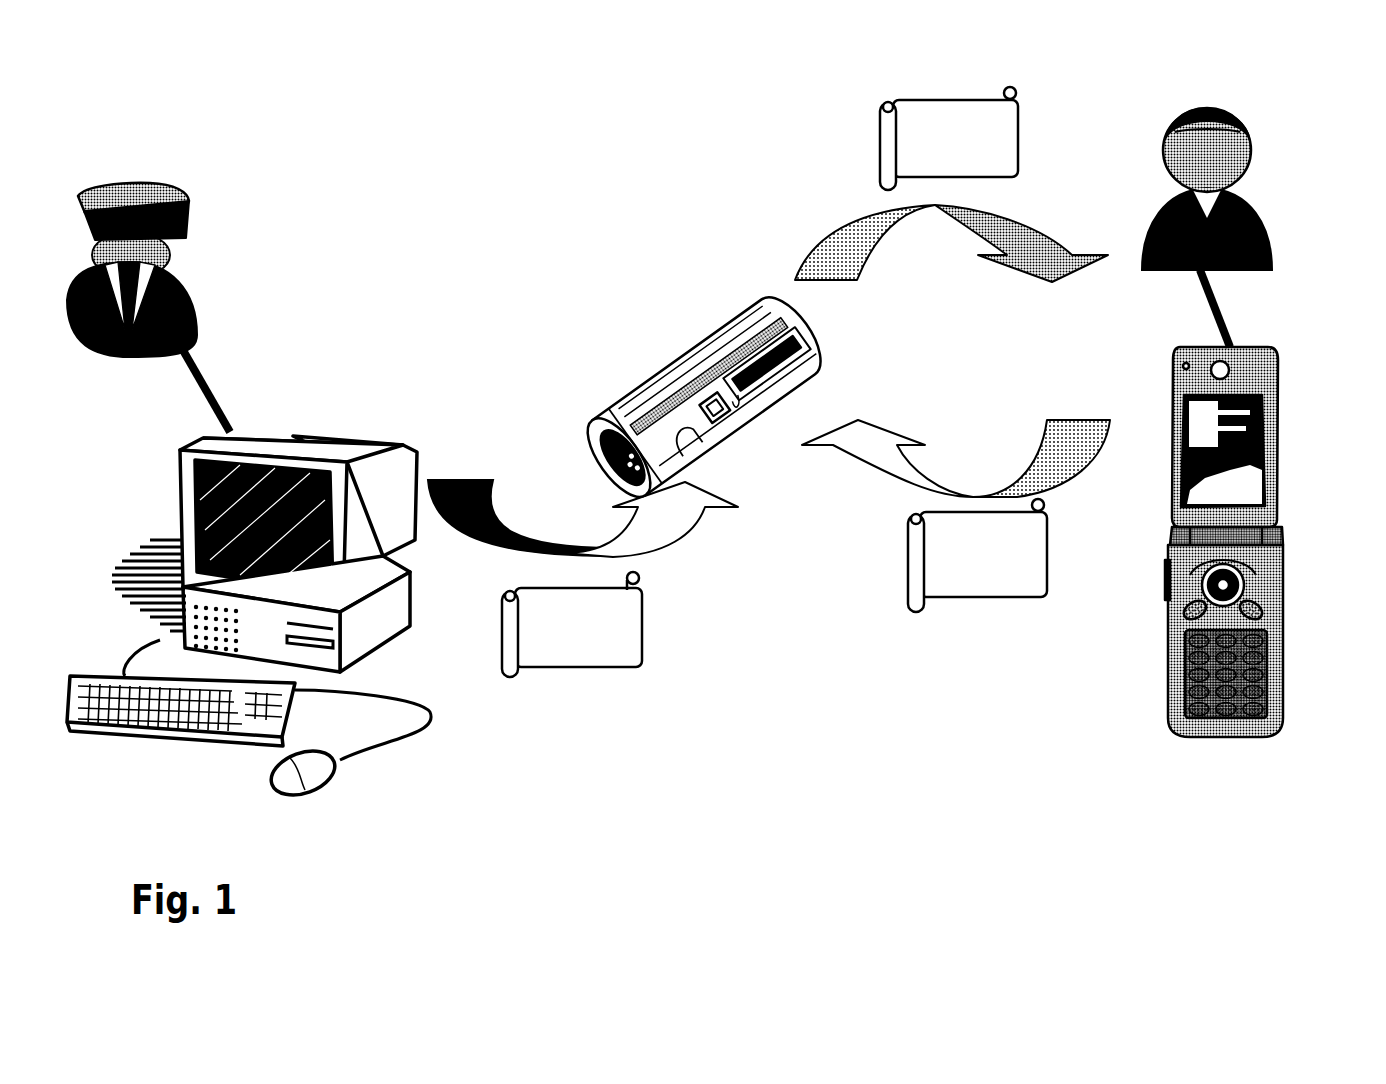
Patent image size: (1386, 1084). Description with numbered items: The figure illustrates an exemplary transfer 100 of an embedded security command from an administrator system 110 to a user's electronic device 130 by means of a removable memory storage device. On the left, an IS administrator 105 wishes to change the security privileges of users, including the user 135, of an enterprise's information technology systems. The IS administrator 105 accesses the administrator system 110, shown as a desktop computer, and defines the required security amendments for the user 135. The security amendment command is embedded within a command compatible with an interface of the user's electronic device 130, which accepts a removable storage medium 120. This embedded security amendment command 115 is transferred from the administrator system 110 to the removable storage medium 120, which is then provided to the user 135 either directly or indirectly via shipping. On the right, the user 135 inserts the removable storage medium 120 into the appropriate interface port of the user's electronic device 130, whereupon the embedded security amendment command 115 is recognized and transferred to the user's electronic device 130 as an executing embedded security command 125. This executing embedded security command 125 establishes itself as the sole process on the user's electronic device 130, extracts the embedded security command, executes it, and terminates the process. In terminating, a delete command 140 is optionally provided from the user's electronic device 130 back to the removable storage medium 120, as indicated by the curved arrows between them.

The transfer 100 is at (835, 712).
The IS administrator 105 is at (156, 307).
The administrator system 110 is at (400, 643).
The embedded security amendment command 115 is at (572, 624).
The removable storage medium 120 is at (653, 348).
The executing embedded security command 125 is at (949, 138).
The user's electronic device 130 is at (1173, 713).
The user 135 is at (1248, 227).
The delete command 140 is at (977, 555).